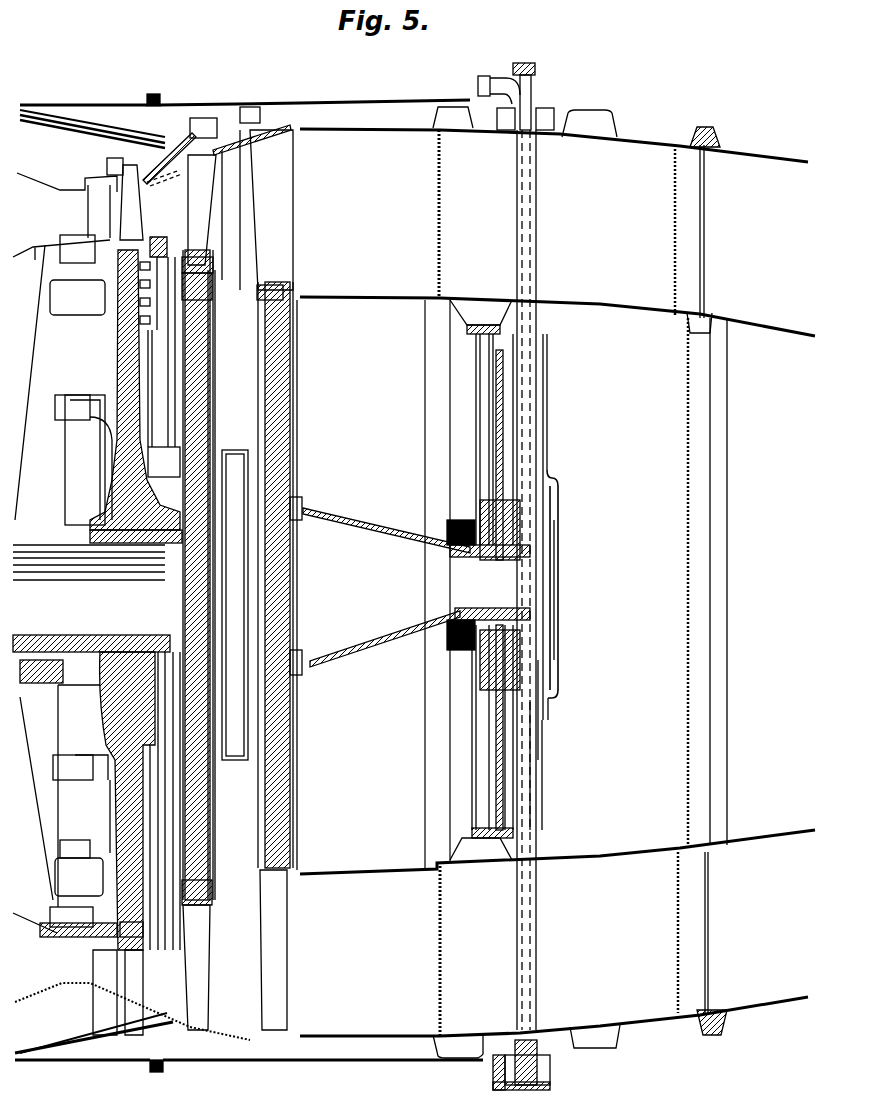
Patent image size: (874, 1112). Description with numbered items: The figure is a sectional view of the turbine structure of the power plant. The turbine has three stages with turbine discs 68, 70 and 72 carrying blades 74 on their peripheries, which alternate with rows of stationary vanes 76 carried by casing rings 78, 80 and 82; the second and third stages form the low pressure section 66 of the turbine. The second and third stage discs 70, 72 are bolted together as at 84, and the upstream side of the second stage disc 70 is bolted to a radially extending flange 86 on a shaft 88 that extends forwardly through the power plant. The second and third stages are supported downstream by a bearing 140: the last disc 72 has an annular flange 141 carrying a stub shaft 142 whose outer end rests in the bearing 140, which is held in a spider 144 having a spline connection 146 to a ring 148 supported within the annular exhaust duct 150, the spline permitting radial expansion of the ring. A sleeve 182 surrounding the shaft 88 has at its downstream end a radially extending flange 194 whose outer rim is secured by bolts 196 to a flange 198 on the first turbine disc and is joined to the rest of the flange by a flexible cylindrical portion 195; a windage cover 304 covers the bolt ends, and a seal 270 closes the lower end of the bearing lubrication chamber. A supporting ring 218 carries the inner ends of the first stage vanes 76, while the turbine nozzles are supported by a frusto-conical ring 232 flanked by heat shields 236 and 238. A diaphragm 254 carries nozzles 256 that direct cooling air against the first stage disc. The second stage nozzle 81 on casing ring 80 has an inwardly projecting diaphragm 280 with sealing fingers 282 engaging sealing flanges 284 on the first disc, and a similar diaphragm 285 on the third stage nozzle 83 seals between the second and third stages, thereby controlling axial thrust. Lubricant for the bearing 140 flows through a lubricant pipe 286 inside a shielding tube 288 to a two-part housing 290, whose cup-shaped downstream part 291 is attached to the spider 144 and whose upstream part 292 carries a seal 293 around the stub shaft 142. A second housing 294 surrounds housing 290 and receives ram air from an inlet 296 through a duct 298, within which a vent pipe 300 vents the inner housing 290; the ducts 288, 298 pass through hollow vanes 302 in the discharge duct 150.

The hollow vanes 302 is at (441, 175).
The duct 298 is at (537, 204).
The inlet 296 is at (493, 82).
The vent pipe 300 is at (532, 100).
The ring 148 is at (557, 300).
The annular exhaust duct 150 is at (772, 916).
The spline connection 146 is at (520, 340).
The spider 144 is at (503, 432).
The housing 290 is at (560, 486).
The downstream part of housing 291 is at (560, 578).
The second housing 294 is at (560, 668).
The lubricant pipe 286 is at (540, 722).
The shielding tube 288 is at (537, 750).
The bearing 140 is at (548, 553).
The stub shaft 142 is at (485, 560).
The upstream part of housing 292 is at (470, 508).
The seal 293 is at (450, 532).
The annular flange 141 is at (324, 508).
The low pressure section of the turbine 66 is at (290, 412).
The third stage turbine disc 72 is at (300, 380).
The second stage turbine disc 70 is at (197, 372).
The first stage turbine disc 68 is at (137, 353).
The blades 74 is at (132, 228).
The stationary vanes 76 is at (100, 207).
The second stage nozzle 81 is at (169, 203).
The third stage nozzle 83 is at (288, 198).
The casing ring 82 is at (227, 130).
The casing ring 80 is at (150, 162).
The casing ring 78 is at (100, 180).
The supporting ring 218 is at (97, 240).
The ring 232 is at (77, 110).
The heat shield 236 is at (65, 123).
The inner heat shield 238 is at (70, 117).
The nozzles 256 is at (86, 305).
The diaphragm 254 is at (25, 345).
The bolts 196 is at (70, 395).
The flange 198 is at (92, 400).
The windage cover 304 is at (55, 425).
The radially extending flange 194 is at (95, 485).
The seal 270 is at (35, 560).
The sleeve 182 is at (60, 560).
The shaft 88 is at (60, 636).
The radially extending flange 86 is at (150, 640).
The flexible cylindrical portion 195 is at (98, 748).
The diaphragm 280 is at (155, 830).
The sealing flanges 284 is at (95, 840).
The sealing fingers 282 is at (95, 935).
The bolted connection 84 is at (300, 727).
The diaphragm 285 is at (300, 757).